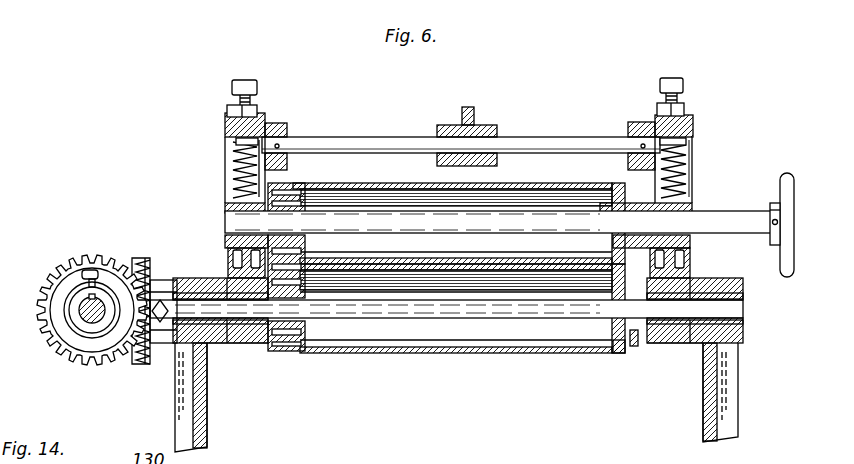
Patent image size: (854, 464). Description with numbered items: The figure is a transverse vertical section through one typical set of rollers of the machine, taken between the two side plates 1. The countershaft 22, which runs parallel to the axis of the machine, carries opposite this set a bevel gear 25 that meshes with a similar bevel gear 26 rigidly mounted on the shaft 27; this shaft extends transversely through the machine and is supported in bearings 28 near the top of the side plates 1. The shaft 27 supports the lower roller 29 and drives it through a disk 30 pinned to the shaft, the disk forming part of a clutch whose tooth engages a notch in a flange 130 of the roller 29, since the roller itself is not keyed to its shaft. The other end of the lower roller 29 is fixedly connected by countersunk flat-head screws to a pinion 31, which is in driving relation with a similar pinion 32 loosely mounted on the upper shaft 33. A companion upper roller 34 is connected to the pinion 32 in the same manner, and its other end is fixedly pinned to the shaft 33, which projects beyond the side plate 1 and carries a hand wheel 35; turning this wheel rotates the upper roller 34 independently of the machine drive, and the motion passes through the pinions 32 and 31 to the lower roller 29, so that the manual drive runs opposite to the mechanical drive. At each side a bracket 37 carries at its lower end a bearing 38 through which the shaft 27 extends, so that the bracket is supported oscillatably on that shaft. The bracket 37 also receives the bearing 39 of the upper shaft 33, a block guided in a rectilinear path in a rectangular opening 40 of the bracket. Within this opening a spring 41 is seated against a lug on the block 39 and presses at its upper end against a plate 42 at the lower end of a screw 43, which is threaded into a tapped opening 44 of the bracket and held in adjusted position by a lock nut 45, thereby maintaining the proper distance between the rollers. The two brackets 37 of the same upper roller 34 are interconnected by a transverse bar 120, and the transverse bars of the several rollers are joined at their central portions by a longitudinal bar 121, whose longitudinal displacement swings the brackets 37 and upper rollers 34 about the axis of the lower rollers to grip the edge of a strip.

The side plate 1 is at (207, 446).
The countershaft 22 is at (88, 316).
The bevel gear 25 is at (94, 262).
The bevel gear 26 is at (141, 262).
The shaft 27 is at (204, 305).
The bearing 28 is at (180, 338).
The lower roller 29 is at (516, 353).
The disk 30 is at (636, 350).
The pinion 31 is at (287, 352).
The pinion 32 is at (310, 177).
The upper shaft 33 is at (230, 222).
The upper roller 34 is at (397, 183).
The hand wheel 35 is at (784, 175).
The bracket 37 is at (224, 179).
The bearing 38 is at (262, 345).
The bearing 39 is at (226, 241).
The rectangular opening 40 is at (230, 158).
The spring 41 is at (229, 147).
The plate 42 is at (229, 132).
The screw 43 is at (253, 86).
The tapped opening 44 is at (226, 118).
The lock nut 45 is at (258, 111).
The transverse bar 120 is at (542, 140).
The longitudinal bar 121 is at (480, 127).
The flange 130 is at (620, 356).